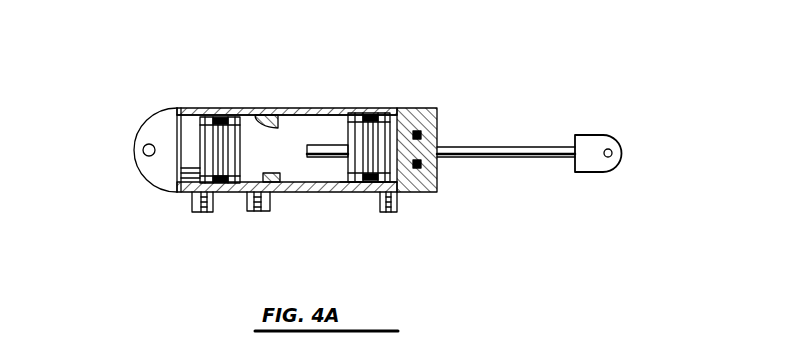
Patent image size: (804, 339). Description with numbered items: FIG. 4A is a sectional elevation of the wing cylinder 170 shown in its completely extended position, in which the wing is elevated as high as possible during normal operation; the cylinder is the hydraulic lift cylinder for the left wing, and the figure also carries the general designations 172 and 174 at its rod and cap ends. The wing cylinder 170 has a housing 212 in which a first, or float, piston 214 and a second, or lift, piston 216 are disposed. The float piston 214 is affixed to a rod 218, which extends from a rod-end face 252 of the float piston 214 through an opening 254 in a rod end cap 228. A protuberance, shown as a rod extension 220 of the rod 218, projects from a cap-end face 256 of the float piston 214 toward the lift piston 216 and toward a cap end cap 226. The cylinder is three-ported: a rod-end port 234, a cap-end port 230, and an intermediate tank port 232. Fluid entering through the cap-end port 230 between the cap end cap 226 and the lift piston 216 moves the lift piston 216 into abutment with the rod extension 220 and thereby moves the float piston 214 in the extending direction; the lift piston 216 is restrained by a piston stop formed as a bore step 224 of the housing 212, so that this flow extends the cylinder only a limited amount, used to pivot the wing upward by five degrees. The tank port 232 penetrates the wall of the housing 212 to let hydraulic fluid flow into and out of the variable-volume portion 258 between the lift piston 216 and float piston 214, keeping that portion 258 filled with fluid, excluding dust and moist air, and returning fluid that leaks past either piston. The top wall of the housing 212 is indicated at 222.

The wing cylinder 170 is at (150, 80).
The rod assembly 172 is at (452, 182).
The end eye mount 174 is at (125, 171).
The housing 212 is at (290, 194).
The float piston 214 is at (383, 120).
The lift piston 216 is at (213, 118).
The rod 218 is at (560, 140).
The rod extension 220 is at (338, 143).
The cylinder top wall 222 is at (270, 110).
The bore step 224 is at (250, 116).
The cap end cap 226 is at (190, 116).
The rod end cap 228 is at (440, 115).
The cap-end port 230 is at (200, 214).
The tank port 232 is at (257, 213).
The rod-end port 234 is at (389, 213).
The rod-end face 252 is at (418, 194).
The opening 254 is at (445, 162).
The cap-end face 256 is at (347, 184).
The portion 258 is at (300, 117).